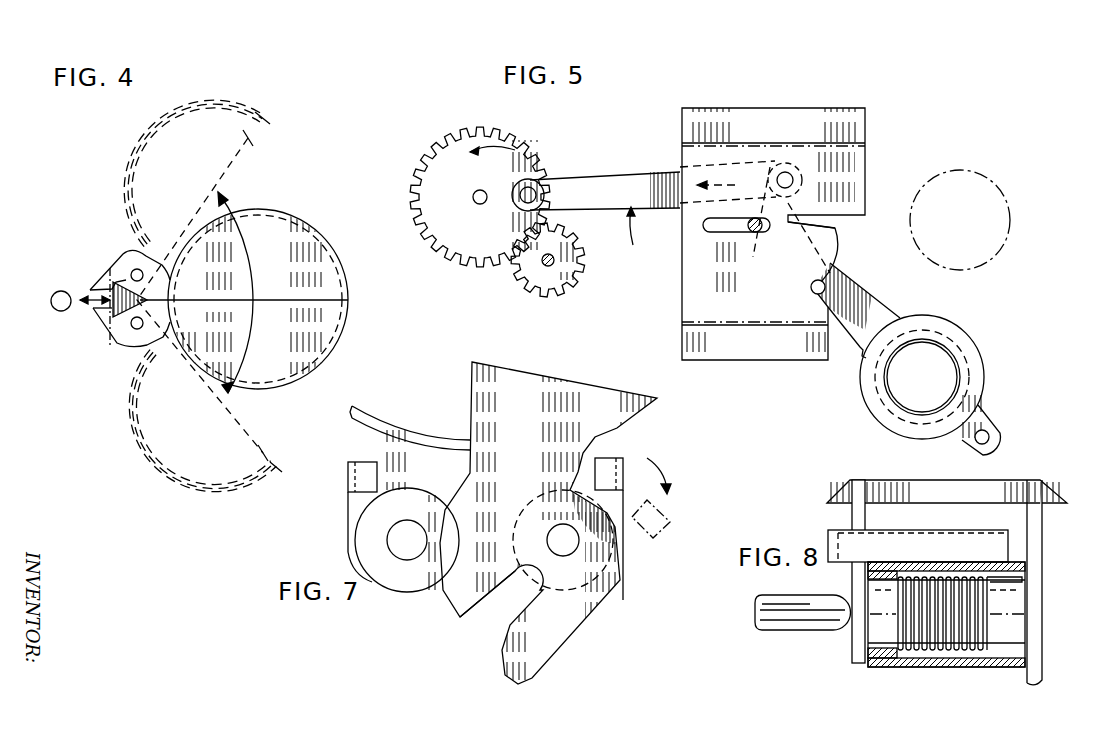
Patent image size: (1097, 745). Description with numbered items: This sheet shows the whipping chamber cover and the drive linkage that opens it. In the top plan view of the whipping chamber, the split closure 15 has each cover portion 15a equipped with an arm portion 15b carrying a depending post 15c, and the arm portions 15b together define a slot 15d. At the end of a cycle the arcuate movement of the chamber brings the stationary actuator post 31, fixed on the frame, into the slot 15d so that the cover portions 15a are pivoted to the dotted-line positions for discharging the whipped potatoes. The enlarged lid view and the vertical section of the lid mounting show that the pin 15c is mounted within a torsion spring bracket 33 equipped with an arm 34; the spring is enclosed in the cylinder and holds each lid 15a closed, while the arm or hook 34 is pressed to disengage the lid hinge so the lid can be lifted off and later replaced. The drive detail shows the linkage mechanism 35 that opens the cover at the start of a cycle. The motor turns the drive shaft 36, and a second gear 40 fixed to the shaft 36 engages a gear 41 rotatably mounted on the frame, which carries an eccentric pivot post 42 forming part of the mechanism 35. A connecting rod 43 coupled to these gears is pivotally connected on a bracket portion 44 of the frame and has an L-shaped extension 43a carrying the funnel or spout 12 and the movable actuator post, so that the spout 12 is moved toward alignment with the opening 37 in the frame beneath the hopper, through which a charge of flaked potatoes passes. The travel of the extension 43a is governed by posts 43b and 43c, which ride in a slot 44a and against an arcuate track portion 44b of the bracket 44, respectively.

In FIG. 5, the dispensing spout 12 is at (953, 364).
In FIG. 4, the closure 15 is at (268, 420).
In FIG. 4, the cover portion 15a is at (249, 137).
In FIG. 7, the cover portion 15a is at (520, 382).
In FIG. 4, the arm portion 15b is at (105, 328).
In FIG. 4, the depending post 15c is at (134, 330).
In FIG. 8, the depending post 15c is at (790, 630).
In FIG. 4, the slot 15d is at (92, 290).
In FIG. 7, the slot 15d is at (456, 610).
In FIG. 4, the stationary actuator post 31 is at (56, 314).
In FIG. 8, the torsion spring bracket 33 is at (988, 562).
In FIG. 5, the arm 34 is at (992, 438).
In FIG. 7, the arm 34 is at (656, 464).
In FIG. 8, the arm 34 is at (845, 530).
In FIG. 5, the linkage mechanism 35 is at (632, 235).
In FIG. 5, the drive shaft 36 is at (550, 270).
In FIG. 5, the opening 37 is at (1000, 192).
In FIG. 5, the second gear 40 is at (578, 280).
In FIG. 5, the gear 41 is at (513, 140).
In FIG. 5, the eccentric pivot post 42 is at (538, 188).
In FIG. 5, the connecting rod 43 is at (628, 176).
In FIG. 5, the L-shaped extension 43a is at (860, 300).
In FIG. 5, the post 43b is at (765, 240).
In FIG. 5, the post 43c is at (826, 284).
In FIG. 5, the bracket portion 44 is at (866, 160).
In FIG. 5, the slot 44a is at (703, 228).
In FIG. 5, the arcuate track portion 44b is at (838, 232).